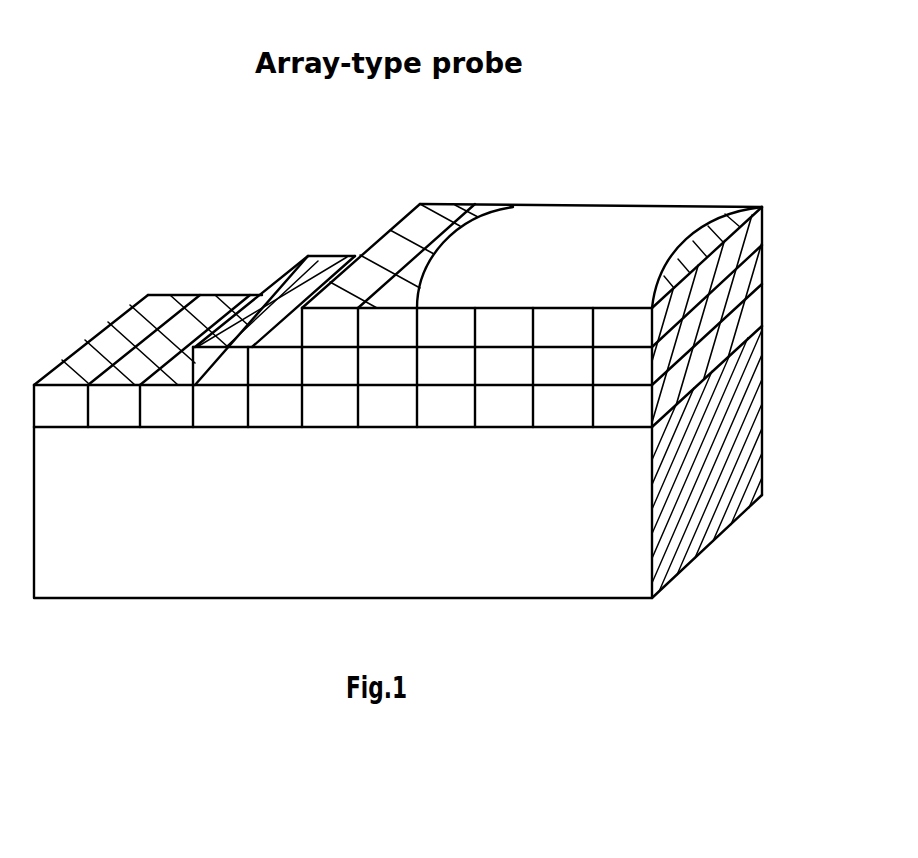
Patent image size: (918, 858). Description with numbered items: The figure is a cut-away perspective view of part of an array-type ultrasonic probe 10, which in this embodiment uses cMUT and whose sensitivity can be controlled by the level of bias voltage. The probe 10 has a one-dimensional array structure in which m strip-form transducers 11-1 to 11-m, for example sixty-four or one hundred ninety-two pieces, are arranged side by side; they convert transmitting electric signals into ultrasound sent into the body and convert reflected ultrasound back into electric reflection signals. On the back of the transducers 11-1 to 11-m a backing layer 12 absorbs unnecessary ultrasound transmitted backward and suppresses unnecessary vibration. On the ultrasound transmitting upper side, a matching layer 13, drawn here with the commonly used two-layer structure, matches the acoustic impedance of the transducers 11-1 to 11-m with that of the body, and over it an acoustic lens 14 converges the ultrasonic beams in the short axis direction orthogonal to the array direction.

The array-type ultrasonic probe 10 is at (618, 77).
The strip-form transducers 11 is at (644, 433).
The backing layer 12 is at (452, 583).
The matching layer 13 is at (403, 243).
The acoustic lens 14 is at (625, 205).